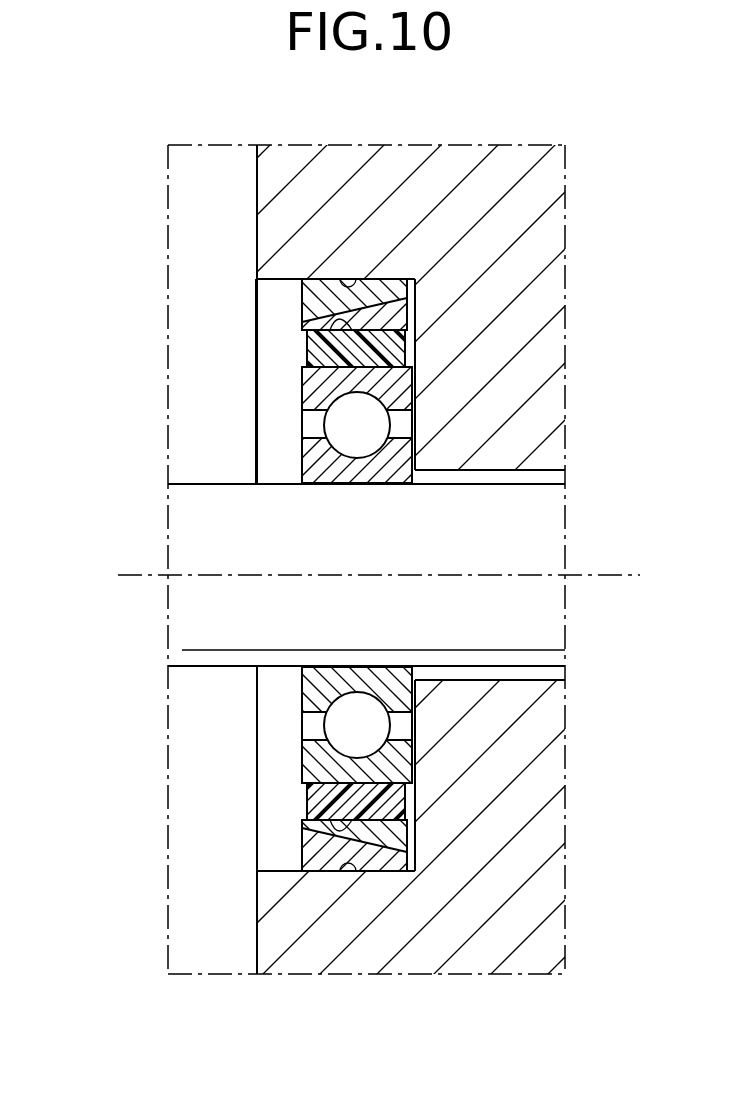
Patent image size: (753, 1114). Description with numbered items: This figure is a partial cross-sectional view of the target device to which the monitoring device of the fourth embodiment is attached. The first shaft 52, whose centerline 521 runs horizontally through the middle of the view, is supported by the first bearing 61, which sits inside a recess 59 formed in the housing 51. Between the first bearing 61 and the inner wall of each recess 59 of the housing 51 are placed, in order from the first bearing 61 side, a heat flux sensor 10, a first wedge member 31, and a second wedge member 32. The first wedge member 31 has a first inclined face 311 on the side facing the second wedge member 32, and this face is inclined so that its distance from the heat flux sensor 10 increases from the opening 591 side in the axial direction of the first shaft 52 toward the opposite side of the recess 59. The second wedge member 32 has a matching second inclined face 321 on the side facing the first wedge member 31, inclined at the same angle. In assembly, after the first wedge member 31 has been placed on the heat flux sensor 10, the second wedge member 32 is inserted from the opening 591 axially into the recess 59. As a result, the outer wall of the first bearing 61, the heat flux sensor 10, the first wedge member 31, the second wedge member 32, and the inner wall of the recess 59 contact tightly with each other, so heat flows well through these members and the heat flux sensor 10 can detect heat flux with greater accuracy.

The heat flux sensor 10 is at (305, 350).
The first wedge member 31 is at (413, 340).
The first inclined face 311 is at (415, 290).
The second wedge member 32 is at (305, 295).
The second inclined face 321 is at (307, 327).
The housing 51 is at (493, 178).
The first shaft 52 is at (198, 535).
The centerline 521 is at (212, 575).
The recess 59 is at (371, 279).
The opening 591 is at (257, 385).
The first bearing 61 is at (305, 395).